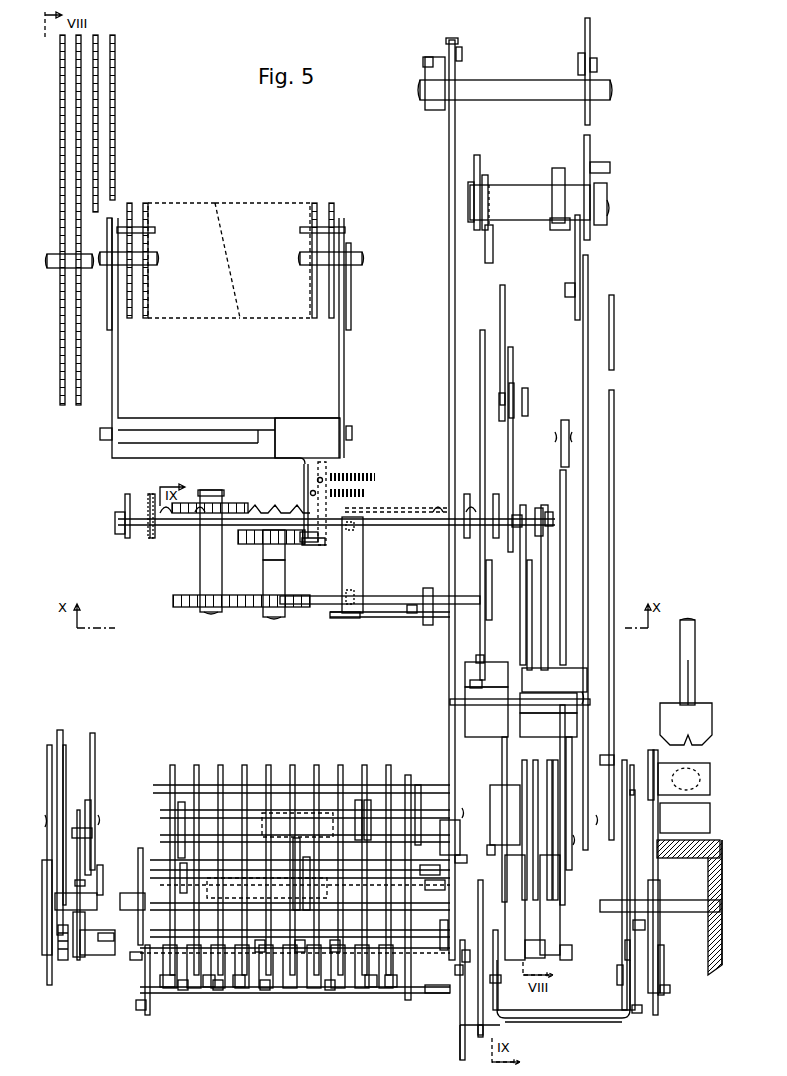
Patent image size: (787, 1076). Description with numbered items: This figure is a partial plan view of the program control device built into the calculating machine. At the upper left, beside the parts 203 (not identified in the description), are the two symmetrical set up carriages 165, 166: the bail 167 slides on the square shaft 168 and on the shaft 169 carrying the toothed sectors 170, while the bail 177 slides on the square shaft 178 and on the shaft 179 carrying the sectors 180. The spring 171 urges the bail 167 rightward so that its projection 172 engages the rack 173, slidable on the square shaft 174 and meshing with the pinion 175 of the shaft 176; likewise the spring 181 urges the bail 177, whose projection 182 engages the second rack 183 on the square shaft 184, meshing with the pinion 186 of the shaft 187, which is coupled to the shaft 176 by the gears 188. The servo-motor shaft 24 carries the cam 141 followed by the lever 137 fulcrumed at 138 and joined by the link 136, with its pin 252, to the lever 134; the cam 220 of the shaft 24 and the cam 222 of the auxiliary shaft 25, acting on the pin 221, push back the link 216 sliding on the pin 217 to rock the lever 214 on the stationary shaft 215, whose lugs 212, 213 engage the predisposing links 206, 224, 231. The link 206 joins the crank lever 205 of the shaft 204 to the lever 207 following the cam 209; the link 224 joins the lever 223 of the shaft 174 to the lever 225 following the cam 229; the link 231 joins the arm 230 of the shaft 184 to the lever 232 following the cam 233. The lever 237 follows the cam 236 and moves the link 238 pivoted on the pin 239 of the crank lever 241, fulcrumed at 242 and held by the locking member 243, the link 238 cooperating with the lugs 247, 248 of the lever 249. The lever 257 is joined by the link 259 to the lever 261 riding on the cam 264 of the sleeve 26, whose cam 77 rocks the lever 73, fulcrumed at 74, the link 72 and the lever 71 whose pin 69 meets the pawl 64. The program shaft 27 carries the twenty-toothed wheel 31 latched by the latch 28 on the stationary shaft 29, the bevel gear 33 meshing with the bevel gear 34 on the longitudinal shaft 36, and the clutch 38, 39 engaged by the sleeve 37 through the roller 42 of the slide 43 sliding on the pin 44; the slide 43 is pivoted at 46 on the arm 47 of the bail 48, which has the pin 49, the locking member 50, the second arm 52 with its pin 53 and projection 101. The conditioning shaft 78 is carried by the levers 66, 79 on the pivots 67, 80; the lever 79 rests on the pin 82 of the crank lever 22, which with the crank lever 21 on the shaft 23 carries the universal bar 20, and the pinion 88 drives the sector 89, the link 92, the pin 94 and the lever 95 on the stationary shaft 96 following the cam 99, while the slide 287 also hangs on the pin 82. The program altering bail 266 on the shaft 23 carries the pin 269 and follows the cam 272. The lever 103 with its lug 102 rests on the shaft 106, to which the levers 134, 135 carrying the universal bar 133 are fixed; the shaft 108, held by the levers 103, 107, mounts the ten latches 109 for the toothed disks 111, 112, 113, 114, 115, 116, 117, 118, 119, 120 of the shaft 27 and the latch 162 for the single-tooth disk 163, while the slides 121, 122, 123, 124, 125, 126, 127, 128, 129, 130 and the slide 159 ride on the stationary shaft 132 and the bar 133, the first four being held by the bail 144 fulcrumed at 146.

The chains 203 is at (113, 160).
The toothed sectors 170 is at (145, 203).
The shaft 169 is at (150, 252).
The set up carriage 165 is at (183, 200).
The set up carriage 166 is at (272, 200).
The sectors 180 is at (331, 203).
The shaft 179 is at (358, 258).
The bail 167 is at (138, 460).
The square shaft 168 is at (100, 436).
The bail 177 is at (305, 425).
The square shaft 178 is at (352, 428).
The projection 182 is at (322, 478).
The spring 181 is at (375, 476).
The spring 171 is at (365, 494).
The projection 172 is at (318, 492).
The rack 173 is at (258, 505).
The pinion 175 is at (183, 505).
The second rack 183 is at (228, 530).
The shaft 176 is at (205, 551).
The pinion 186 is at (288, 538).
The shaft 187 is at (282, 614).
The gears 188 is at (255, 605).
The square shaft 174 is at (116, 523).
The second square shaft 184 is at (152, 540).
The link 136 is at (449, 323).
The lever 137 is at (448, 44).
The fulcrum 138 is at (463, 52).
The cam 141 is at (432, 110).
The servo-motor shaft 24 is at (605, 98).
The stationary pin 217 is at (594, 62).
The cam 220 is at (596, 73).
The cam 264 is at (477, 155).
The sleeve 26 is at (468, 195).
The lever 261 is at (492, 228).
The cam 77 is at (558, 168).
The pin 221 is at (602, 160).
The cam 222 is at (608, 188).
The auxiliary shaft 25 is at (610, 212).
The lever 73 is at (575, 256).
The fulcrum 74 is at (566, 292).
The locking member 243 is at (505, 318).
The link 216 is at (583, 333).
The link 72 is at (614, 370).
The pin 239 is at (500, 393).
The crank lever 241 is at (515, 388).
The fulcrum 242 is at (530, 393).
The crank lever 205 is at (563, 420).
The shaft 204 is at (557, 438).
The predisposing member 238 is at (512, 453).
The lever 223 is at (523, 505).
The arm 230 is at (540, 510).
The predisposing member 206 is at (566, 480).
The link 231 is at (548, 560).
The predisposing member 224 is at (532, 585).
The link 259 is at (480, 430).
The lever 257 is at (486, 592).
The longitudinal shaft 36 is at (695, 628).
The clutch 39 is at (698, 700).
The clutch 38 is at (700, 705).
The stationary pin 44 is at (650, 750).
The roller 42 is at (710, 778).
The sleeve 37 is at (700, 808).
The second bevel gear 34 is at (685, 860).
The bevel gear 33 is at (712, 975).
The slide 43 is at (656, 871).
The lever 66 is at (643, 918).
The locking member 50 is at (660, 950).
The pin 49 is at (648, 990).
The pivot 46 is at (640, 1012).
The bail 48 is at (625, 1022).
The arm 47 is at (628, 1000).
The projection 101 is at (500, 1010).
The second arm 52 is at (496, 952).
The pin 53 is at (496, 978).
The pivot 67 is at (618, 975).
The cam 229 is at (545, 955).
The shaft 78 is at (563, 950).
The cam 272 is at (545, 917).
The cam 236 is at (525, 898).
The cam 233 is at (562, 940).
The cam 209 is at (560, 930).
The program shaft 27 is at (622, 880).
The pawl 64 is at (630, 855).
The stationary shaft 96 is at (40, 822).
The shaft 23 is at (596, 820).
The pin 269 is at (547, 812).
The lever 232 is at (538, 795).
The lever 71 is at (612, 762).
The lever 207 is at (570, 752).
The pin 69 is at (628, 763).
The lug 212 is at (575, 666).
The stationary shaft 215 is at (582, 692).
The lever 214 is at (578, 705).
The lug 213 is at (575, 727).
The lug 247 is at (470, 670).
The pin 252 is at (465, 663).
The second lever 249 is at (466, 685).
The lug 248 is at (487, 737).
The lever 237 is at (502, 776).
The bail 266 is at (490, 815).
The lever 225 is at (500, 815).
The wheel 31 is at (490, 848).
The slide 159 is at (407, 785).
The stationary shaft 132 is at (418, 788).
The crank lever 21 is at (460, 842).
The disk 163 is at (457, 855).
The bail 144 is at (440, 873).
The fulcrum 146 is at (436, 882).
The universal bar 133 is at (426, 940).
The shaft 106 is at (468, 950).
The lever 134 is at (456, 965).
The shaft 108 is at (430, 995).
The latch 162 is at (425, 1010).
The latch 28 is at (480, 1005).
The lever 103 is at (463, 1028).
The lug 102 is at (480, 1033).
The lever 95 is at (50, 745).
The link 92 is at (62, 733).
The pin 94 is at (66, 770).
The toothed sector 89 is at (78, 810).
The slide 287 is at (96, 780).
The pin 82 is at (92, 834).
The crank lever 22 is at (91, 851).
The lever 79 is at (85, 884).
The universal bar 20 is at (103, 873).
The lever 135 is at (140, 848).
The cam 99 is at (47, 955).
The pinion 88 is at (62, 960).
The pivot 80 is at (85, 958).
The second lever 107 is at (145, 985).
The stationary shaft 29 is at (140, 1012).
The slide 130 is at (171, 765).
The slide 129 is at (200, 764).
The slide 128 is at (220, 765).
The slide 127 is at (248, 764).
The slide 126 is at (268, 765).
The slide 125 is at (296, 764).
The slide 124 is at (316, 765).
The slide 123 is at (344, 764).
The slide 122 is at (364, 765).
The slide 121 is at (392, 764).
The toothed disk 120 is at (168, 990).
The latches 109 is at (222, 990).
The toothed disk 117 is at (238, 990).
The toothed disk 115 is at (260, 952).
The toothed disk 114 is at (300, 952).
The toothed disk 112 is at (335, 952).
The toothed disk 111 is at (389, 990).
The toothed disk 119 is at (183, 992).
The toothed disk 118 is at (218, 992).
The toothed disk 116 is at (265, 992).
The toothed disk 113 is at (330, 992).